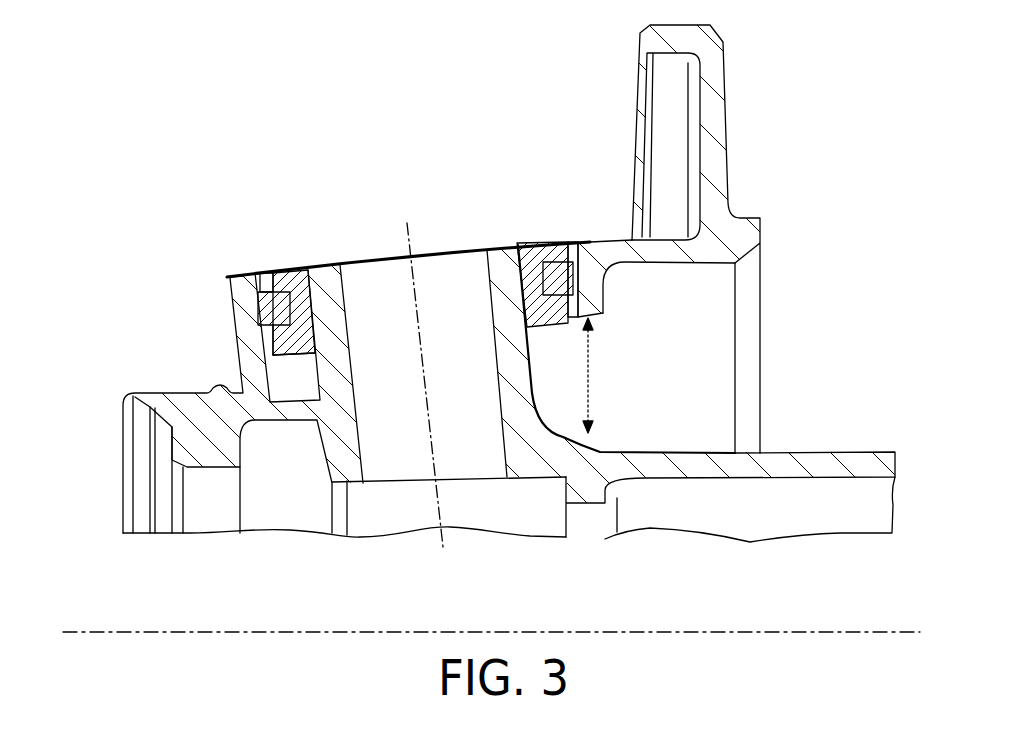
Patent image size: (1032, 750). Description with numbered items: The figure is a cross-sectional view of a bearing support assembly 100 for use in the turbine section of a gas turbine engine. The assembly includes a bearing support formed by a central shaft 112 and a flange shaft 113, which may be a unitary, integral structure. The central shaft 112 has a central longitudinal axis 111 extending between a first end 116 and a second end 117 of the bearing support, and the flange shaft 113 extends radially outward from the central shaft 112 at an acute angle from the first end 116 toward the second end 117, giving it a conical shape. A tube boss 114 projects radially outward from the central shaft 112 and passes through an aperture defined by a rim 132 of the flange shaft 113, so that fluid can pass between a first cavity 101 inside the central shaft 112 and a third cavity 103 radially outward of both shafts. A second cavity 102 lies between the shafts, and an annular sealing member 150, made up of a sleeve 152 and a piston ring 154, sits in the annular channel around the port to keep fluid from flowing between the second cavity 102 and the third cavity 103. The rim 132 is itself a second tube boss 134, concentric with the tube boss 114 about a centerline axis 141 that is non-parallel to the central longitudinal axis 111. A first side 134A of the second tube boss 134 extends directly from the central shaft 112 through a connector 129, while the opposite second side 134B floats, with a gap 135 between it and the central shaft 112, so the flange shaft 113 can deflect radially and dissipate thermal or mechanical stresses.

The bearing support assembly 100 is at (112, 150).
The first cavity 101 is at (537, 519).
The second cavity 102 is at (314, 389).
The third cavity 103 is at (423, 179).
The central longitudinal axis 111 is at (660, 630).
The central shaft 112 is at (817, 462).
The flange shaft 113 is at (630, 250).
The tube boss 114 is at (507, 355).
The first end 116 is at (140, 555).
The second end 117 is at (881, 554).
The connector 129 is at (292, 412).
The rim 132 is at (247, 273).
The second tube boss 134 is at (224, 308).
The first side 134A is at (250, 365).
The second side 134B is at (595, 303).
The gap 135 is at (593, 362).
The centerline axis 141 is at (413, 300).
The annular sealing member 150 is at (315, 202).
The sleeve 152 is at (302, 273).
The piston ring 154 is at (273, 273).